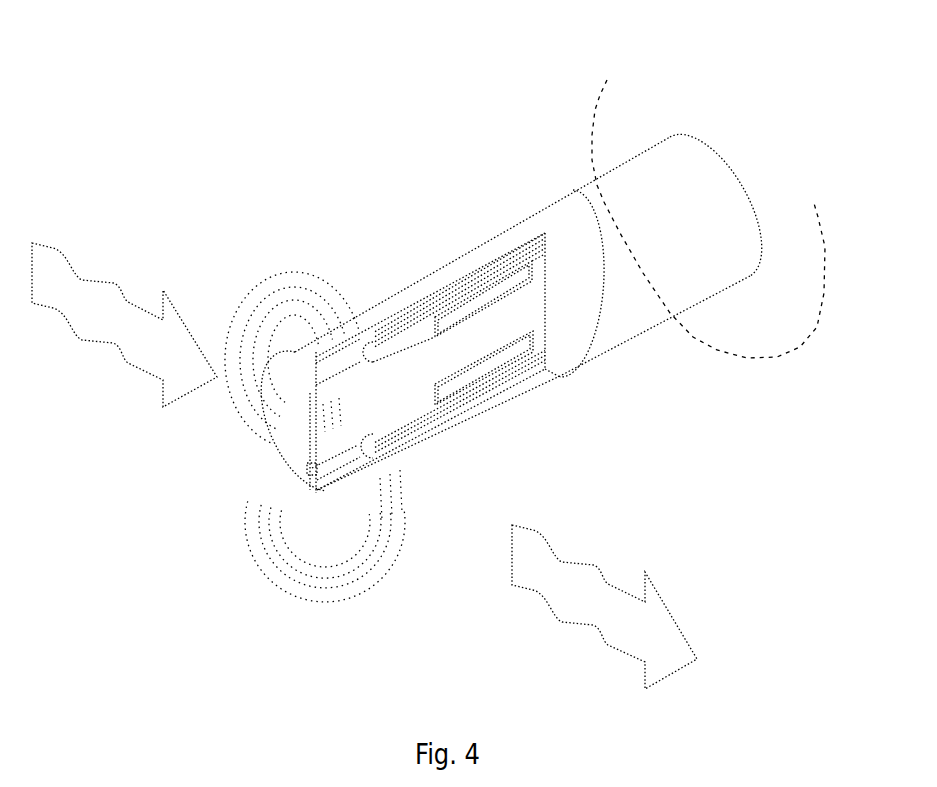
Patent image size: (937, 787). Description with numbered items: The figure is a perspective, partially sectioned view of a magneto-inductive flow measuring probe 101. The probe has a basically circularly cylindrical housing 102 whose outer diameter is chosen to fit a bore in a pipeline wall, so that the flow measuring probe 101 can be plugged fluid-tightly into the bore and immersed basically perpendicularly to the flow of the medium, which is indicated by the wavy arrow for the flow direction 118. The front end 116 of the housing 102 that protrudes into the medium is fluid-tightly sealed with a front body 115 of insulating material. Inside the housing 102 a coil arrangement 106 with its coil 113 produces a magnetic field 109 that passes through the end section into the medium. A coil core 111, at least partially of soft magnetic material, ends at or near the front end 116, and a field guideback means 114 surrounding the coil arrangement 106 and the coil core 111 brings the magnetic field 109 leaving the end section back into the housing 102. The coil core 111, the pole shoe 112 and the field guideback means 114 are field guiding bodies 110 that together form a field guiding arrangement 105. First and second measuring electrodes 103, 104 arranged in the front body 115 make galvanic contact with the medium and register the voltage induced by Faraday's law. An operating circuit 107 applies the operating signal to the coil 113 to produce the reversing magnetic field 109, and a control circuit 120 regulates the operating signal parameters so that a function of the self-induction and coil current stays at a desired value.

The flow measuring probe 101 is at (218, 66).
The housing 102 is at (553, 203).
The first measuring electrode 103 is at (315, 397).
The second measuring electrode 104 is at (340, 452).
The field guiding arrangement 105 is at (560, 312).
The coil arrangement 106 is at (490, 273).
The operating circuit 107 is at (533, 270).
The magnetic field 109 is at (237, 307).
The field guiding bodies 110 is at (484, 365).
The coil core 111 is at (402, 387).
The pole shoe 112 is at (360, 403).
The coil 113 is at (445, 325).
The field guideback means 114 is at (537, 370).
The front body 115 is at (316, 352).
The front end 116 is at (277, 447).
The flow direction 118 is at (672, 612).
The control circuit 120 is at (626, 253).